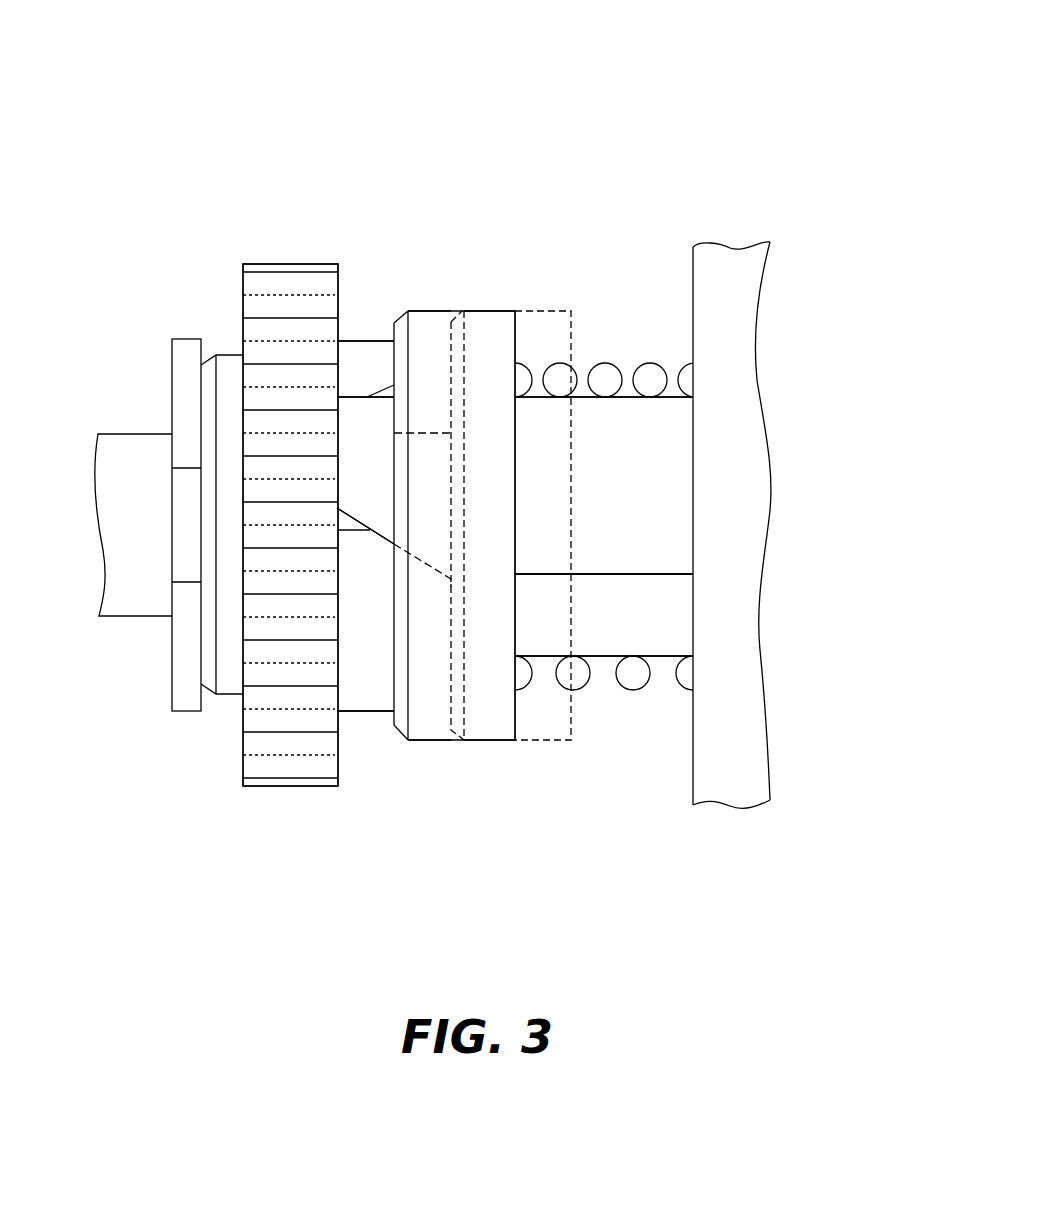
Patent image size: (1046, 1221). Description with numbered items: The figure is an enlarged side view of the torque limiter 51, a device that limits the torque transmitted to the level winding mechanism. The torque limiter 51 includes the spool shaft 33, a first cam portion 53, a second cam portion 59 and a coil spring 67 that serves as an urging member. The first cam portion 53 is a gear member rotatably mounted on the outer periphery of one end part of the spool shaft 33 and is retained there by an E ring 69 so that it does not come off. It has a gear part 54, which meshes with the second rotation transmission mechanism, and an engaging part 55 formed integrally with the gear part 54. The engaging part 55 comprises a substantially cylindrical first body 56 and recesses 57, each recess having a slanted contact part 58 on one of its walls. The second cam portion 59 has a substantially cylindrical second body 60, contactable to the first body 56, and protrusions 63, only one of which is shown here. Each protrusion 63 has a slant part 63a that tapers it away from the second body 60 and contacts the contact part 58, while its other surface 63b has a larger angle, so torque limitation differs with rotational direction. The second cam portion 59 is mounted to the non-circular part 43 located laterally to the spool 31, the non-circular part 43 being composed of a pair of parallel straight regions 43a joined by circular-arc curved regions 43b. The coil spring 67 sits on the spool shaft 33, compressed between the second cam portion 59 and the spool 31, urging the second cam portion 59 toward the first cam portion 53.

The spool 31 is at (720, 265).
The spool shaft 33 is at (138, 413).
The non-circular part 43 is at (542, 848).
The straight regions 43a is at (603, 640).
The curved regions 43b is at (658, 553).
The torque limiter 51 is at (610, 147).
The first cam portion 53 is at (262, 238).
The gear part 54 is at (307, 282).
The engaging part 55 is at (413, 151).
The first body 56 is at (376, 365).
The recesses 57 is at (337, 425).
The contact part 58 is at (382, 537).
The second cam portion 59 is at (542, 743).
The second body 60 is at (427, 723).
The protrusion 63 is at (357, 471).
The slant part 63a is at (350, 520).
The other surface 63b is at (357, 397).
The coil spring 67 is at (645, 352).
The E ring 69 is at (187, 735).